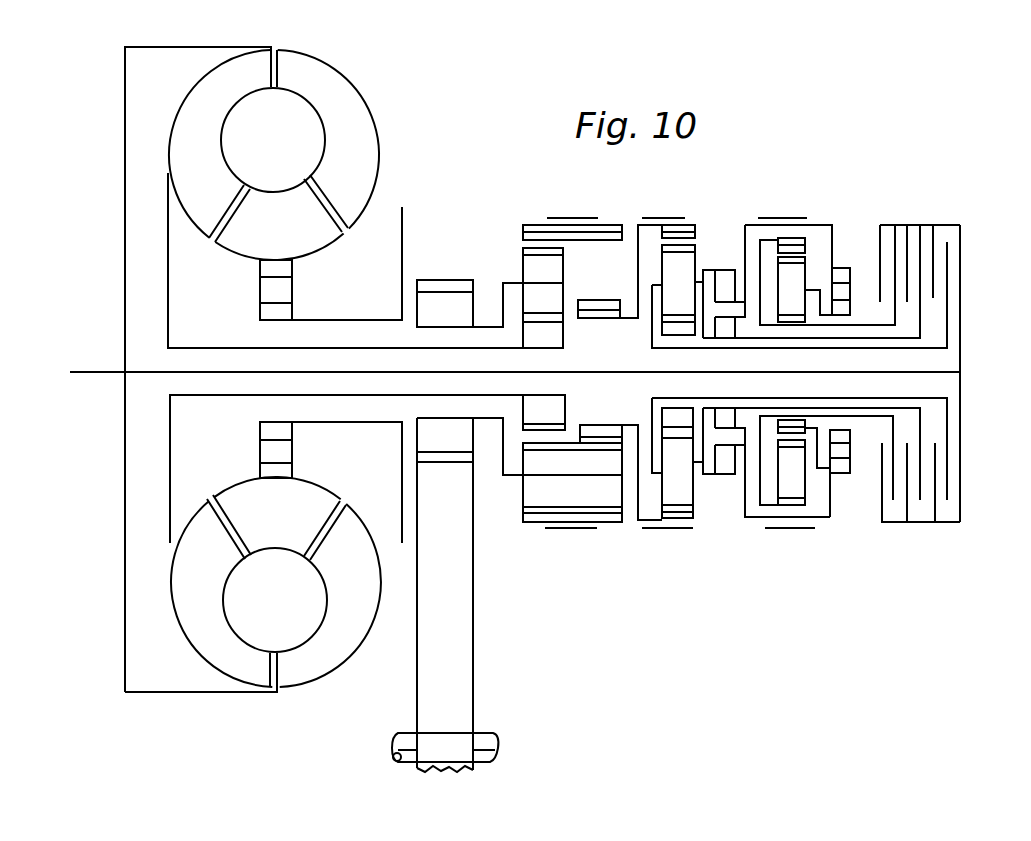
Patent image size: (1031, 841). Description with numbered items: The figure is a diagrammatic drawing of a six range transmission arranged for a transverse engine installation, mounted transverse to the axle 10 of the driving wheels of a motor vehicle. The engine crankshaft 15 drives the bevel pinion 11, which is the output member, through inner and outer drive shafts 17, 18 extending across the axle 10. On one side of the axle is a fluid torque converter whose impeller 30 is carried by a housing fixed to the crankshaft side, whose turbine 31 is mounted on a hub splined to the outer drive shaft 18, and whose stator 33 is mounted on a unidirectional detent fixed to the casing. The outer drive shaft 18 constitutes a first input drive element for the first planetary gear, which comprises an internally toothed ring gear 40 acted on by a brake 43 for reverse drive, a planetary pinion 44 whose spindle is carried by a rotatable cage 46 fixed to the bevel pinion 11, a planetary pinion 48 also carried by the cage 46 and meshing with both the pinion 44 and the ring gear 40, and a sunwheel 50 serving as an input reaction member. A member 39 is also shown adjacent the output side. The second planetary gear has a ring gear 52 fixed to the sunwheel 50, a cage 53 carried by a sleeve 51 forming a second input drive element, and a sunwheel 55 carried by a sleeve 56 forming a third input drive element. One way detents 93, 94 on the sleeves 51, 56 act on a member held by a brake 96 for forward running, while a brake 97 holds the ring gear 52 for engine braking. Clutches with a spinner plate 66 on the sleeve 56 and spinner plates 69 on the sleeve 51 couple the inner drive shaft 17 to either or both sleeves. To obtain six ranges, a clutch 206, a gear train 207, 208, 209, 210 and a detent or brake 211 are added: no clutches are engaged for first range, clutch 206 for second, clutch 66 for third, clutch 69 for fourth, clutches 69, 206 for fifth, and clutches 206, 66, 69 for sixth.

The axle 10 is at (485, 733).
The bevel pinion 11 is at (433, 283).
The engine crankshaft 15 is at (107, 370).
The inner drive shaft 17 is at (160, 373).
The outer drive shaft 18 is at (207, 398).
The impeller 30 is at (352, 113).
The turbine 31 is at (192, 110).
The stator 33 is at (305, 243).
The clutch member 39 is at (535, 407).
The ring gear 40 is at (532, 228).
The brake 43 is at (587, 217).
The planetary pinion 44 is at (532, 268).
The cage 46 is at (483, 325).
The planetary pinion 48 is at (572, 476).
The sunwheel 50 is at (598, 310).
The sleeve 51 is at (865, 396).
The ring gear 52 is at (695, 230).
The cage 53 is at (652, 412).
The sunwheel 55 is at (683, 425).
The sleeve 56 is at (910, 385).
The spinner plate 66 is at (925, 242).
The spinner plates 69 is at (952, 245).
The one way detent 93 is at (727, 417).
The one way detent 94 is at (723, 285).
The brake 96 is at (792, 217).
The brake 97 is at (678, 217).
The clutch 206 is at (897, 242).
The gear train 207 is at (792, 427).
The gear train 208 is at (787, 272).
The gear train 209 is at (797, 245).
The gear train 210 is at (792, 487).
The detent or brake 211 is at (843, 453).